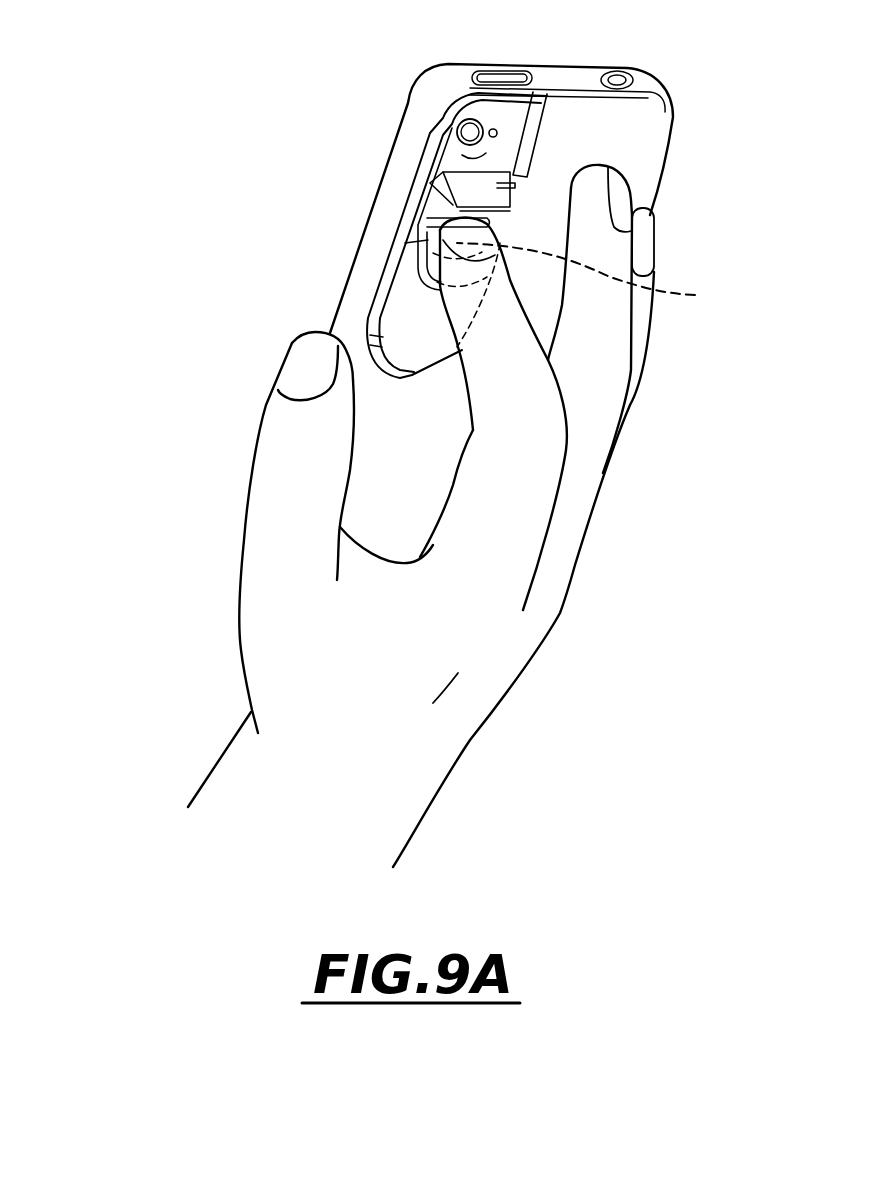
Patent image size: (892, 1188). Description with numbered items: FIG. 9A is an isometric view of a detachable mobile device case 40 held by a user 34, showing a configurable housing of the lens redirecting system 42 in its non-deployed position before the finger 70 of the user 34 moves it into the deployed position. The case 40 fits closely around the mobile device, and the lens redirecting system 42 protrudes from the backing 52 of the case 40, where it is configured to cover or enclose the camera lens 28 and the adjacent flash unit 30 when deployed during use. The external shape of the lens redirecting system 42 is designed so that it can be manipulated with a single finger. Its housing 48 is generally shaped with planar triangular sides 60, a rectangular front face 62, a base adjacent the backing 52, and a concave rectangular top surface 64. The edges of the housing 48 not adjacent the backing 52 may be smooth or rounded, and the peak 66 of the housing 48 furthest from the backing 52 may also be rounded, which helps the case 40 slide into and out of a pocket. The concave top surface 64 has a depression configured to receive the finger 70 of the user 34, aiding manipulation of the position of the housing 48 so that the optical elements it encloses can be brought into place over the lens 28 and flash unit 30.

The lens 28 is at (469, 128).
The flash unit 30 is at (497, 128).
The user 34 is at (211, 686).
The mobile device case 40 is at (664, 113).
The lens redirecting system 42 is at (354, 201).
The housing 48 is at (394, 210).
The backing 52 is at (460, 165).
The planar triangular sides 60 is at (442, 208).
The rectangular front face 62 is at (468, 183).
The concave rectangular top surface 64 is at (592, 275).
The peak 66 is at (510, 208).
The finger 70 is at (524, 318).